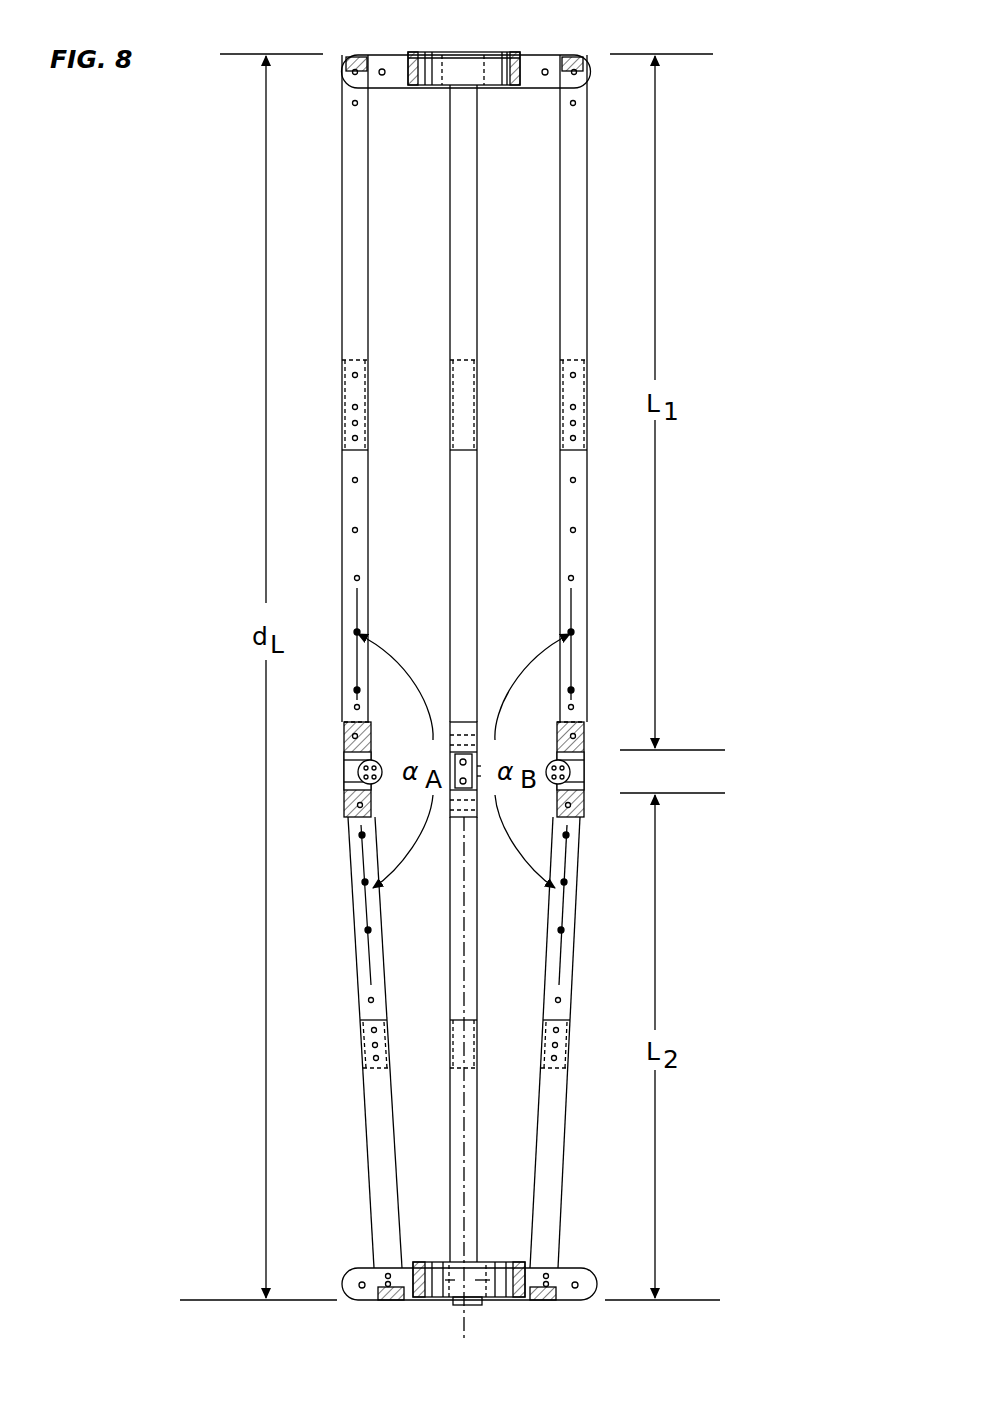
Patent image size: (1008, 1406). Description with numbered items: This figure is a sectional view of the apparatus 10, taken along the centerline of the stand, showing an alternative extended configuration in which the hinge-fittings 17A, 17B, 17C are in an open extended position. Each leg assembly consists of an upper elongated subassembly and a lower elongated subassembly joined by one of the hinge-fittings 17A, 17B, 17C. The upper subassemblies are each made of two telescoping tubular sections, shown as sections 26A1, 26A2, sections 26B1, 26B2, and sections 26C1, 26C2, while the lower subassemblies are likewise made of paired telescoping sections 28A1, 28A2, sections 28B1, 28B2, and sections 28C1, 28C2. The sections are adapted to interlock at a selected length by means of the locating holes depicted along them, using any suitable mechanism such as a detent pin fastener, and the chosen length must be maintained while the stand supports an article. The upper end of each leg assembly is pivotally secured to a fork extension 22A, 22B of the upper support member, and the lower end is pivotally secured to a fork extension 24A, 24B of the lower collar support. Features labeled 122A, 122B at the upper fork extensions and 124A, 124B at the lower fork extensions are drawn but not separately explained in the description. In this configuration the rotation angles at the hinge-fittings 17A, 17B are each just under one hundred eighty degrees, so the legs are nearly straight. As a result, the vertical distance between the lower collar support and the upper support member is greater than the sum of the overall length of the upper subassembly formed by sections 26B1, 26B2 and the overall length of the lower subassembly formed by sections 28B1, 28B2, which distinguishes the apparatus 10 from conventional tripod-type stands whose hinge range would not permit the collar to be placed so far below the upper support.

The apparatus 10 is at (796, 68).
The fork extension 22A is at (385, 64).
The fork extension 22B is at (543, 64).
The upper pivot pin left 122A is at (382, 76).
The upper pivot pin right 122B is at (545, 76).
The telescoping tubular section 26A2 is at (368, 243).
The telescoping tubular section 26A1 is at (368, 498).
The telescoping tubular section 26B2 is at (560, 265).
The telescoping tubular section 26B1 is at (560, 540).
The telescoping tubular section 26C2 is at (452, 307).
The telescoping tubular section 26C1 is at (450, 565).
The hinge-fitting 17A is at (332, 773).
The hinge-fitting 17B is at (611, 763).
The hinge-fitting 17C is at (448, 744).
The telescoping tubular section 28C1 is at (452, 940).
The telescoping tubular section 28C2 is at (477, 1078).
The telescoping tubular section 28A1 is at (360, 1020).
The telescoping tubular section 28A2 is at (365, 1153).
The telescoping tubular section 28B1 is at (572, 1010).
The telescoping tubular section 28B2 is at (568, 1153).
The lower pivot pin left 124A is at (382, 1272).
The lower pivot pin right 124B is at (552, 1272).
The fork extension 24A is at (364, 1292).
The fork extension 24B is at (572, 1292).